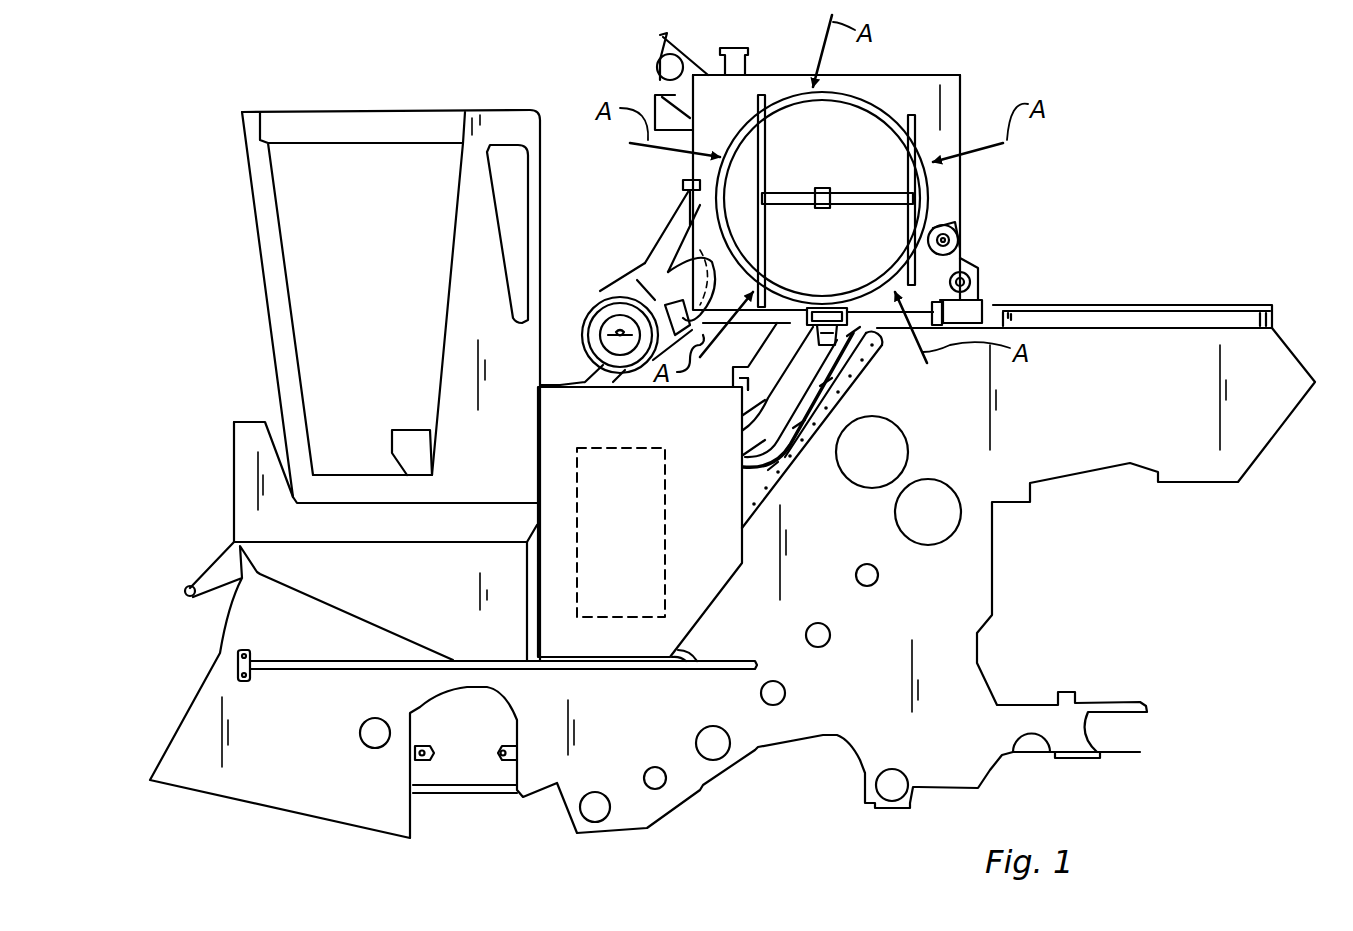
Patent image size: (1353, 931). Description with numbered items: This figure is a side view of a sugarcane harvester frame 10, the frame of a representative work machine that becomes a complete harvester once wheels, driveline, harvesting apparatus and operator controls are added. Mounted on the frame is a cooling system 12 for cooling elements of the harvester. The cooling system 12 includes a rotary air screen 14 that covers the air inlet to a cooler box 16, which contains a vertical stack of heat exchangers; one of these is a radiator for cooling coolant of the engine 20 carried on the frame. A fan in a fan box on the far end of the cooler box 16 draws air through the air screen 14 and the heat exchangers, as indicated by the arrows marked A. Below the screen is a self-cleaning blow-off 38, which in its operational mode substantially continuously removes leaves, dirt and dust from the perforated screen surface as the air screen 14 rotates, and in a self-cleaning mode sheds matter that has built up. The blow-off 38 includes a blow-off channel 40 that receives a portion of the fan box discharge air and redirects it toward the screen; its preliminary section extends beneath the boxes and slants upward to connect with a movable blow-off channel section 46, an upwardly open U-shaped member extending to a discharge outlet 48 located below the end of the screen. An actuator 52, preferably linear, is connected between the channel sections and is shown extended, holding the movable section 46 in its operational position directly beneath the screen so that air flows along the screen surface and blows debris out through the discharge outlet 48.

The sugarcane harvester frame 10 is at (290, 80).
The cooling system 12 is at (962, 78).
The rotary air screen 14 is at (877, 100).
The cooler box 16 is at (773, 75).
The engine 20 is at (665, 590).
The self-cleaning blow-off 38 is at (850, 333).
The blow-off channel 40 is at (740, 390).
The movable blow-off channel section 46 is at (744, 384).
The discharge outlet 48 is at (827, 307).
The actuator 52 is at (763, 432).